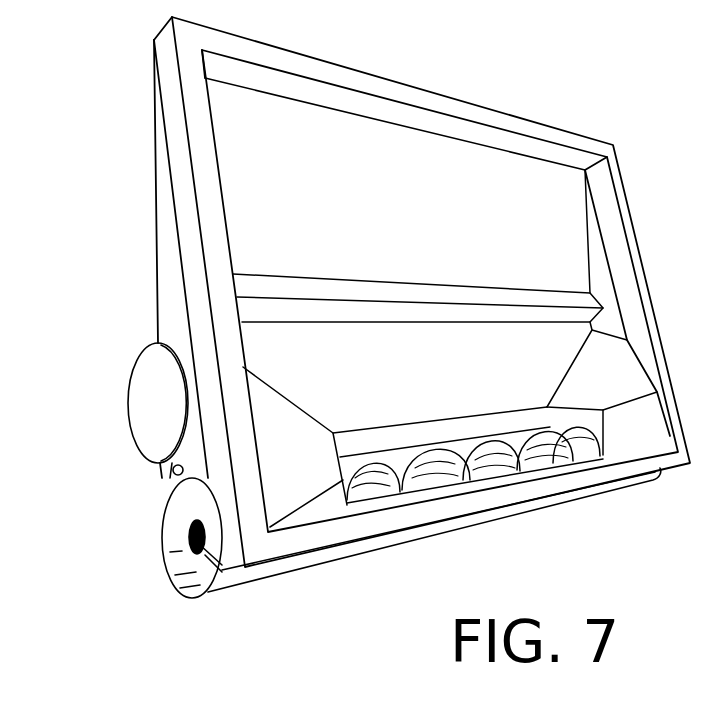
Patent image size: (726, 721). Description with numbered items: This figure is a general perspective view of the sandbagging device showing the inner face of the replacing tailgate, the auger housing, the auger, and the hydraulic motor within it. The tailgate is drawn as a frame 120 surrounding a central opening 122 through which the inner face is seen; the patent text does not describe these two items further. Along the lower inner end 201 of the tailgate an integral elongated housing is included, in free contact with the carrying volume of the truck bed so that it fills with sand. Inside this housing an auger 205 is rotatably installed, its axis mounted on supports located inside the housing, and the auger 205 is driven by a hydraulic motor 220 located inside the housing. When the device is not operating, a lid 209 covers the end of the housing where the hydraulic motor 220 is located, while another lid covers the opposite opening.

The frame housing 120 is at (483, 117).
The opening 122 is at (510, 195).
The lower inner end 201 is at (301, 588).
The auger 205 is at (490, 467).
The lid 209 is at (153, 412).
The hydraulic motor 220 is at (163, 533).